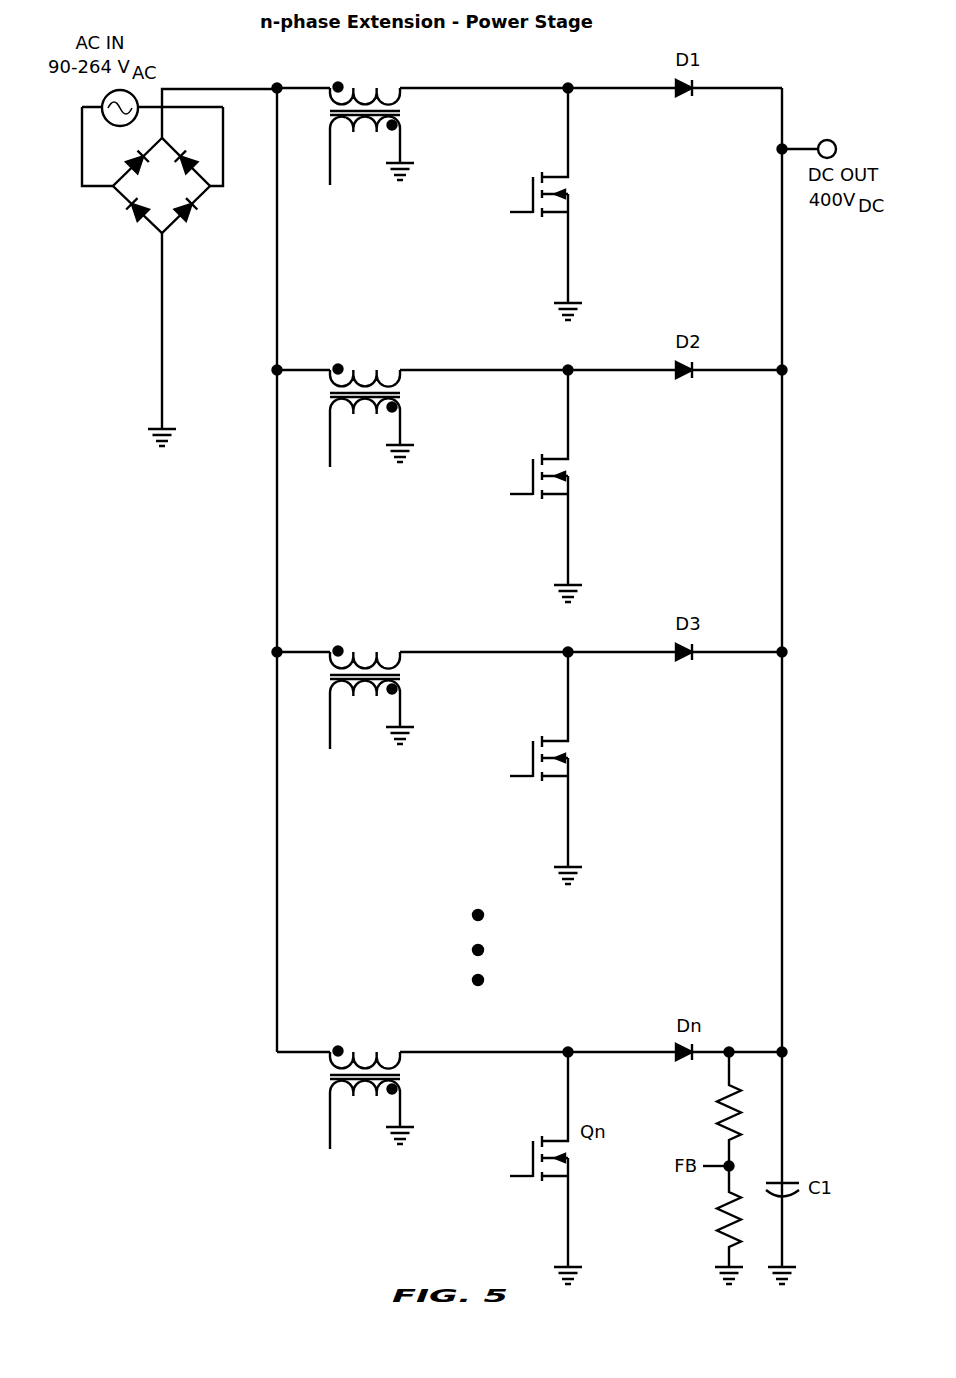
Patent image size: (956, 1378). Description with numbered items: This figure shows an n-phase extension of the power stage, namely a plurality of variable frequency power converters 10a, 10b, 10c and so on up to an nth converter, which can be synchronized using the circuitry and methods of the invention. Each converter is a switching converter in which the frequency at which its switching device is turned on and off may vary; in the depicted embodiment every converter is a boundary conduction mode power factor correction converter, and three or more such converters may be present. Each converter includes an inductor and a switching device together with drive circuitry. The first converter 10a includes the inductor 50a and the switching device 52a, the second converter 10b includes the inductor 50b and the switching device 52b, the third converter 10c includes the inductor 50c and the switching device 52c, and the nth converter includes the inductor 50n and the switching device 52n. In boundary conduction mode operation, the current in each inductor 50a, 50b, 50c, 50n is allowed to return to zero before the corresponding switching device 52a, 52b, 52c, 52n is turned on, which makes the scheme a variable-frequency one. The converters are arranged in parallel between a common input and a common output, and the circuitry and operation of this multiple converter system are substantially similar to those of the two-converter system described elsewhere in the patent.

The variable frequency power converter 10a is at (588, 87).
The variable frequency power converter 10b is at (588, 369).
The variable frequency power converter 10c is at (588, 651).
The inductor 50a is at (387, 87).
The inductor 50b is at (387, 369).
The inductor 50c is at (387, 651).
The inductor 50n is at (387, 1051).
The switching device 52a is at (526, 214).
The switching device 52b is at (526, 496).
The switching device 52c is at (526, 778).
The switching device 52n is at (526, 1178).